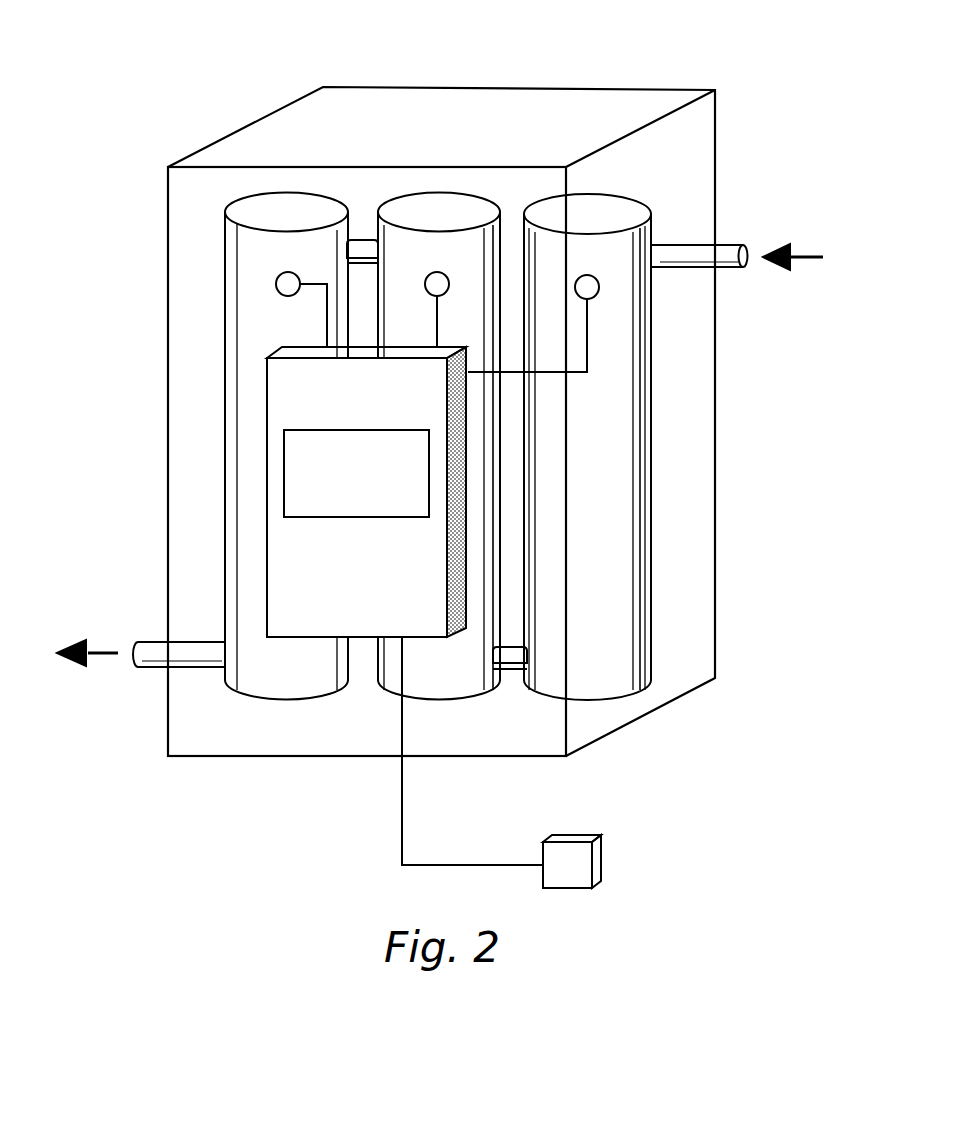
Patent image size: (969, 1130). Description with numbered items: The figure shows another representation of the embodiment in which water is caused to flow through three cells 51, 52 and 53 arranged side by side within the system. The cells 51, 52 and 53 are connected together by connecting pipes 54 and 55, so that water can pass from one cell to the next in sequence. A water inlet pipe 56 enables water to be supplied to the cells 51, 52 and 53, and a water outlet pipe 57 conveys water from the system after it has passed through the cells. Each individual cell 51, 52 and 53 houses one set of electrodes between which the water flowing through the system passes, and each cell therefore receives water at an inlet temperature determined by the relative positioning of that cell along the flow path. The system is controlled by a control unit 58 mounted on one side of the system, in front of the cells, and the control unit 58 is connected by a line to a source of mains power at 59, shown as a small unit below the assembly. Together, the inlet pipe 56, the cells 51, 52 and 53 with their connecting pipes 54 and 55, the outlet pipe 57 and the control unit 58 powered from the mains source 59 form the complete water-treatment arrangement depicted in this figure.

The cell 51 is at (627, 317).
The cell 52 is at (438, 208).
The cell 53 is at (235, 257).
The connecting pipe 54 is at (507, 672).
The connecting pipe 55 is at (363, 243).
The water inlet pipe 56 is at (723, 247).
The water outlet pipe 57 is at (155, 643).
The control unit 58 is at (277, 410).
The source of mains power 59 is at (562, 880).